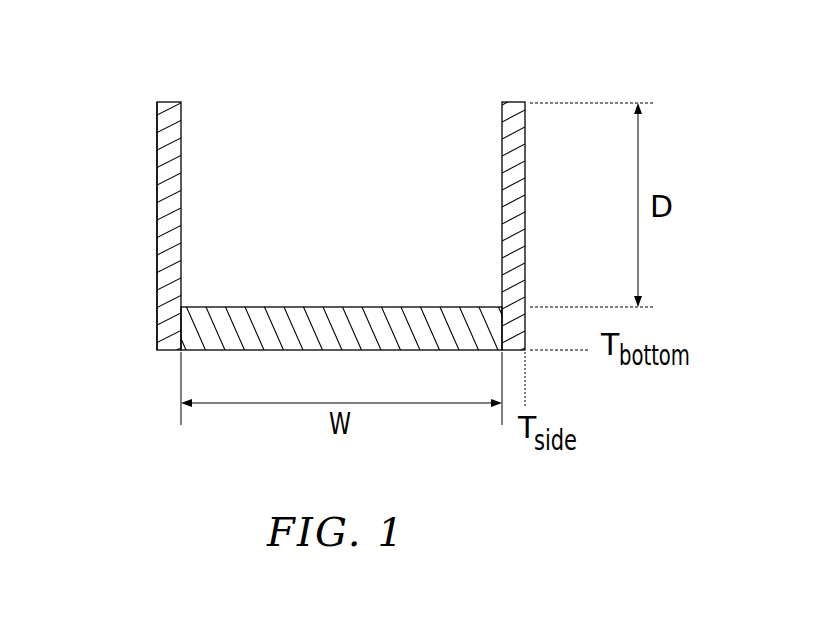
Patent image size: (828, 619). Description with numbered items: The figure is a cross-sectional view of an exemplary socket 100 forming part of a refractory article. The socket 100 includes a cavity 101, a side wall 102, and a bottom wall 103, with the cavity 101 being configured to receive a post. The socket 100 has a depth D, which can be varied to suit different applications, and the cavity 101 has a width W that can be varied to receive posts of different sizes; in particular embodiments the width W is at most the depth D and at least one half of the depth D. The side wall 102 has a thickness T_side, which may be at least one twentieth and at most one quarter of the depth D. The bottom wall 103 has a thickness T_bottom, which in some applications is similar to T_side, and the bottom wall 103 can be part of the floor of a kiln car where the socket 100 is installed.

The socket 100 is at (146, 42).
The cavity 101 is at (208, 164).
The side wall 102 is at (157, 223).
The bottom wall 103 is at (525, 208).